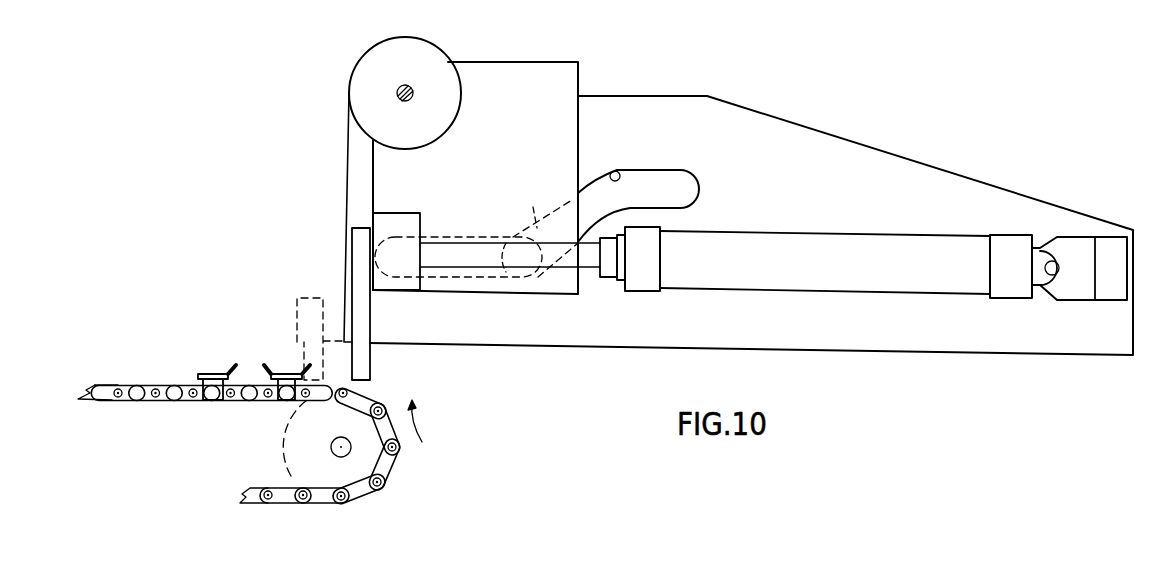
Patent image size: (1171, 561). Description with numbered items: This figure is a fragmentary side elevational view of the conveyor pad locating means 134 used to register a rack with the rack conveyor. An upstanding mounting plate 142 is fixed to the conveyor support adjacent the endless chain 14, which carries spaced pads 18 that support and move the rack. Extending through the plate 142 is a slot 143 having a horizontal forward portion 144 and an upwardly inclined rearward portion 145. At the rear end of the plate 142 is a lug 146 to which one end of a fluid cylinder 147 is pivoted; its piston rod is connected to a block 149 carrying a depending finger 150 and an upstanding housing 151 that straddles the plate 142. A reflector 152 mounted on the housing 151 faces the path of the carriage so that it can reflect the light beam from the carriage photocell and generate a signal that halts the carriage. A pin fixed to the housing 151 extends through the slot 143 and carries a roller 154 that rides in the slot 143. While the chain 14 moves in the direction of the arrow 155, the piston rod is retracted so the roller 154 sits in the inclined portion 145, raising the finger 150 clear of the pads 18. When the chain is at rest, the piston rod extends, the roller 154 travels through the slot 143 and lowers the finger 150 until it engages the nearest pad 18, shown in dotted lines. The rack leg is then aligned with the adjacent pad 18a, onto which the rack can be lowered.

The conveyor pad locating means 134 is at (543, 43).
The reflector 152 is at (430, 48).
The upstanding housing 151 is at (395, 178).
The mounting plate 142 is at (735, 125).
The depending finger 150 is at (370, 364).
The block 149 is at (400, 215).
The horizontal forward portion of slot 144 is at (455, 270).
The slot 143 is at (537, 228).
The roller 154 is at (532, 205).
The upwardly inclined rearward portion of slot 145 is at (615, 171).
The fluid cylinder 147 is at (843, 250).
The lug 146 is at (1110, 291).
The endless chain 14 is at (247, 396).
The conveyor pad 18a is at (213, 375).
The pad 18 is at (285, 377).
The arrow 155 is at (417, 428).